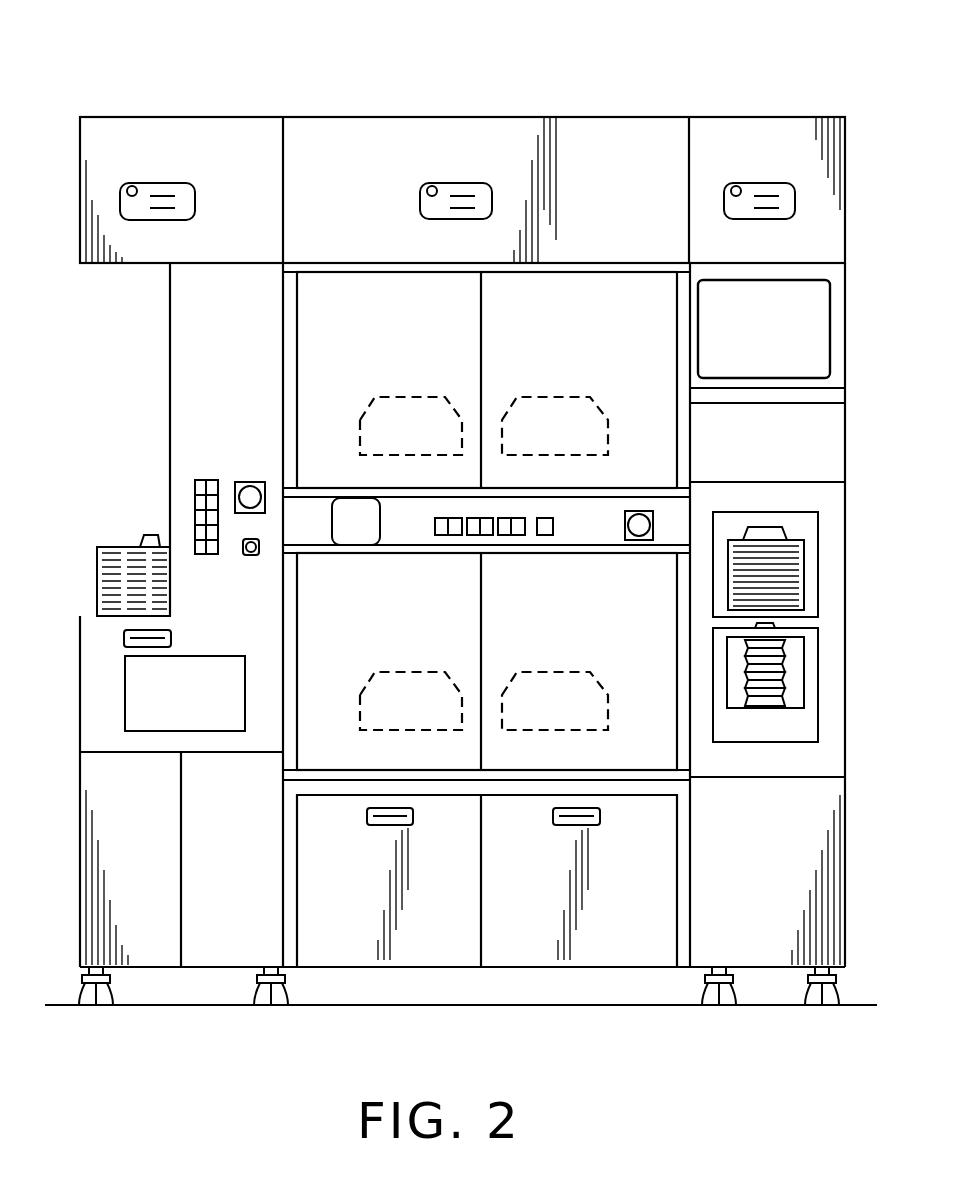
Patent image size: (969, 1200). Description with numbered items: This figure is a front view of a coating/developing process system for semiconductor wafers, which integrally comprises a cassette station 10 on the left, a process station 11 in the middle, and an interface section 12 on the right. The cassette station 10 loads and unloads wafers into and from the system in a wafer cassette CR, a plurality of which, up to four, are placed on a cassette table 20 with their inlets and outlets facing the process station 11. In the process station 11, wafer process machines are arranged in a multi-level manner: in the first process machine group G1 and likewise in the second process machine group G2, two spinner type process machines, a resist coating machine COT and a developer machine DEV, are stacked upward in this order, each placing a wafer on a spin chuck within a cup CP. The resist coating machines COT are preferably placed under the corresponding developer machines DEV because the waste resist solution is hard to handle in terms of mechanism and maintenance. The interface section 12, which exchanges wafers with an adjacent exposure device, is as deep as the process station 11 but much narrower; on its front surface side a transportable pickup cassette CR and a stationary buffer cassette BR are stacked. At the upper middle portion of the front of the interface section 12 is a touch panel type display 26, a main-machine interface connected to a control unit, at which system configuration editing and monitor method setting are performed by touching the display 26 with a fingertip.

The cassette station 10 is at (169, 98).
The process station 11 is at (476, 98).
The interface section 12 is at (761, 98).
The cassette table 20 is at (84, 616).
The touch panel type display 26 is at (831, 313).
The wafer cassette CR is at (108, 547).
The buffer cassette BR is at (798, 672).
The first process machine group G1 is at (348, 262).
The second process machine group G2 is at (592, 262).
The developer machine DEV is at (432, 344).
The resist coating machine COT is at (432, 614).
The cup CP is at (371, 402).